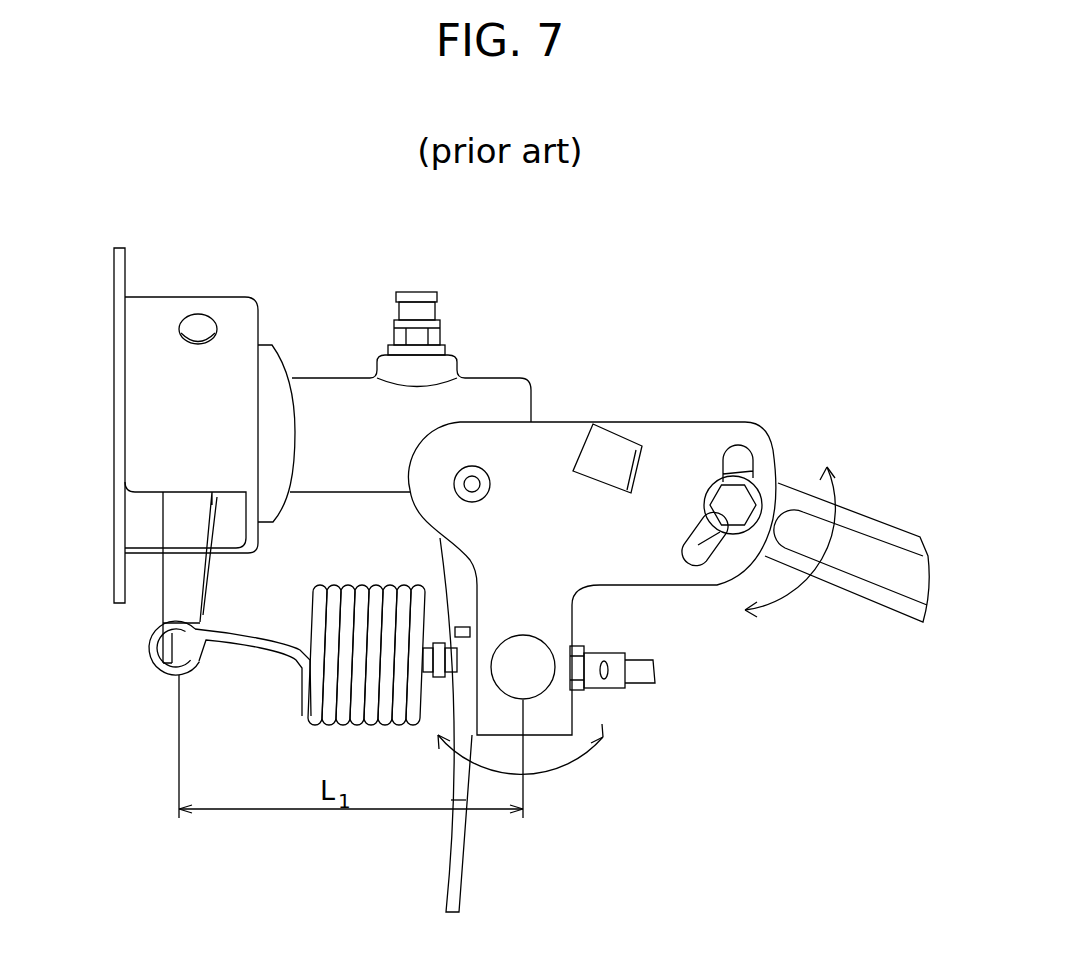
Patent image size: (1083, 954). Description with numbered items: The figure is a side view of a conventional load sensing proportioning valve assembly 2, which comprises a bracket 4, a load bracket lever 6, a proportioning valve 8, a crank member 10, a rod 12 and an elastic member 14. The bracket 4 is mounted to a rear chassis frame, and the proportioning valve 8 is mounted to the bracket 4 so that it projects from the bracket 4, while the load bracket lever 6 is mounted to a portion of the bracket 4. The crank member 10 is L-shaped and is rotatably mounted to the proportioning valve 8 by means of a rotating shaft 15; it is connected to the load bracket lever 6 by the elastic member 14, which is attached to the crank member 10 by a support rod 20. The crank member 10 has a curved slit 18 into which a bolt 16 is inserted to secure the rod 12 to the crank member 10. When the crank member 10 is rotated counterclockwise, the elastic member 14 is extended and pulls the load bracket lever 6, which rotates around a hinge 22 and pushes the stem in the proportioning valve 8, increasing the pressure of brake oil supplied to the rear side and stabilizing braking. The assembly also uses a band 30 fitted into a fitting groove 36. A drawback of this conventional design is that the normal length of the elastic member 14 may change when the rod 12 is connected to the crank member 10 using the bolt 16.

The load sensing proportioning valve assembly 2 is at (533, 485).
The bracket 4 is at (132, 468).
The load bracket lever 6 is at (178, 598).
The proportioning valve 8 is at (350, 390).
The crank member 10 is at (722, 432).
The rod 12 is at (872, 528).
The elastic member 14 is at (310, 697).
The rotating shaft 15 is at (476, 482).
The bolt 16 is at (732, 500).
The curved slit 18 is at (703, 560).
The support rod 20 is at (645, 670).
The hinge 22 is at (200, 325).
The band 30 is at (460, 884).
The fitting groove 36 is at (585, 652).